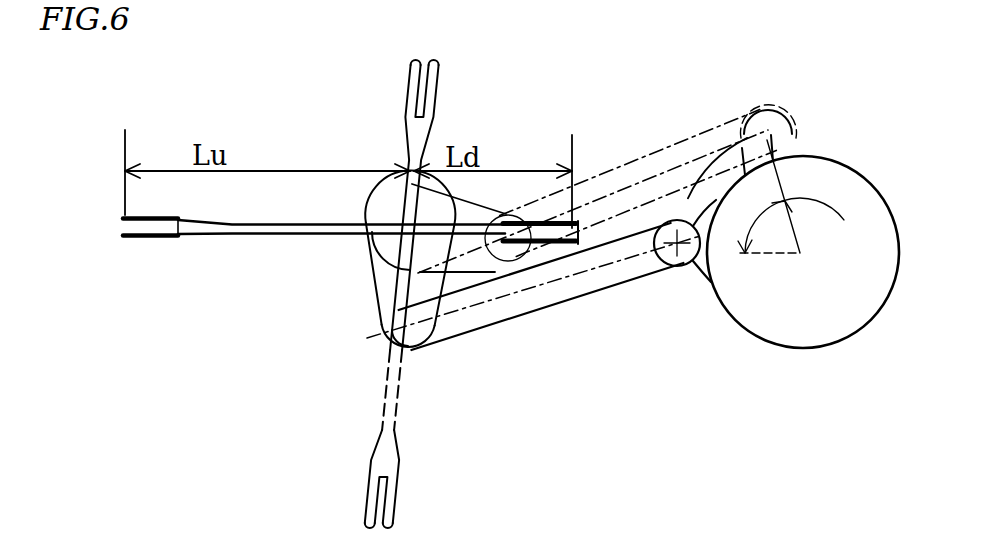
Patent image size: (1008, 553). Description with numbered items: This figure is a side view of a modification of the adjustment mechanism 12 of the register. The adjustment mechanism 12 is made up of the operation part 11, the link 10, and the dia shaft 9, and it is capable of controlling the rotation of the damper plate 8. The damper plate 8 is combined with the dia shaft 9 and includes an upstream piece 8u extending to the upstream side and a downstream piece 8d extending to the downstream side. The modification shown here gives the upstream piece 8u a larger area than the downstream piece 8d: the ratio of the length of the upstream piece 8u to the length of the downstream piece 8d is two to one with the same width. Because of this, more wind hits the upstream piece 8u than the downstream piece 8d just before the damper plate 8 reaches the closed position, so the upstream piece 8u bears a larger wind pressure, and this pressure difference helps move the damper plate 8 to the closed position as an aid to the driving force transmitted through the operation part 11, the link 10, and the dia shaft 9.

The damper plate 8 is at (385, 194).
The upstream piece 8u is at (236, 235).
The downstream piece 8d is at (508, 228).
The dia shaft 9 is at (373, 284).
The link 10 is at (520, 318).
The operation part 11 is at (767, 334).
The adjustment mechanism 12 is at (86, 291).